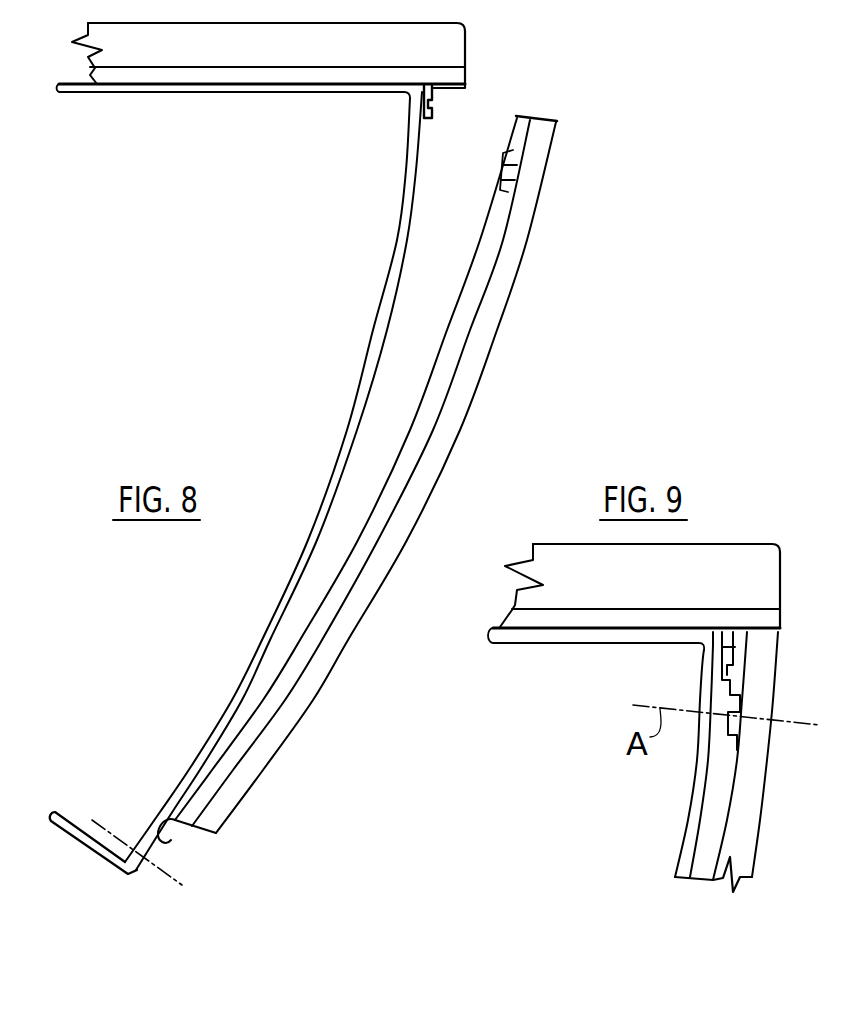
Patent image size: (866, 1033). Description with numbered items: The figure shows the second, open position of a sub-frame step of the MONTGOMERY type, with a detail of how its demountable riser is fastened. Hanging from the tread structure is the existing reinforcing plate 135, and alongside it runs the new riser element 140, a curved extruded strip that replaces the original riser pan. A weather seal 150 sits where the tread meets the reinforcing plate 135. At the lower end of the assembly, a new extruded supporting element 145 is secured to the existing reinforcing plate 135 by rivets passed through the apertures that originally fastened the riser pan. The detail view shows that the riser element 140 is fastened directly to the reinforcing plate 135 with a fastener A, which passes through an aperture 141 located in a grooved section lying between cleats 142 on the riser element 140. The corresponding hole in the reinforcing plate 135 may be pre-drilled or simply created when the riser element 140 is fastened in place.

In FIG. 8, the weather seal 150 is at (437, 100).
In FIG. 8, the reinforcing plate 135 is at (353, 402).
In FIG. 8, the riser element 140 is at (471, 410).
In FIG. 8, the extruded supporting element 145 is at (168, 847).
In FIG. 9, the aperture 141 is at (738, 708).
In FIG. 9, the cleats 142 is at (752, 812).